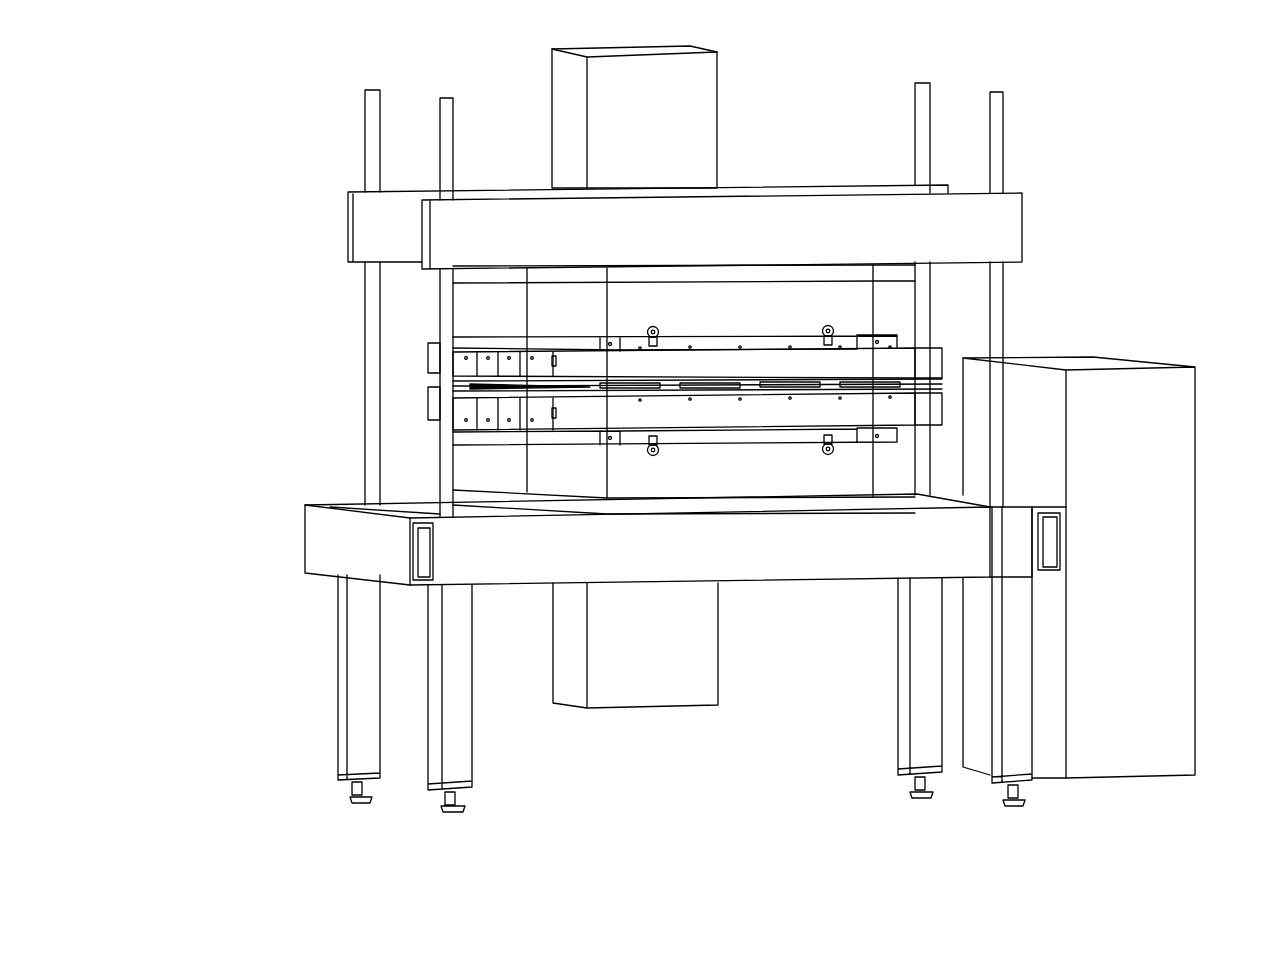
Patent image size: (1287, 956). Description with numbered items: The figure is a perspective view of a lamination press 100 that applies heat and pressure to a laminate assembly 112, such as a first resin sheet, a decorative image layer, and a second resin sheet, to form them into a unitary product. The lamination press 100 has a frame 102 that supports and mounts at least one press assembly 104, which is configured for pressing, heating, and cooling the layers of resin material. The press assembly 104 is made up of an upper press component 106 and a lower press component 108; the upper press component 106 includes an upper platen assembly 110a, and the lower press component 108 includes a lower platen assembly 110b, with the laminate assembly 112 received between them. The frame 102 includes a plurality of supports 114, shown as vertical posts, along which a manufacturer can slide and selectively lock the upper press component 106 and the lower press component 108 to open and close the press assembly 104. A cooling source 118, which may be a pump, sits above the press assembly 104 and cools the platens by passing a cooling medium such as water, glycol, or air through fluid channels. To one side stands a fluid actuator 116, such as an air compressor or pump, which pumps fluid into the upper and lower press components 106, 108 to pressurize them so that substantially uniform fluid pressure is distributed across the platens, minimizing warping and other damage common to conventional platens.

The lamination press 100 is at (224, 92).
The frame 102 is at (322, 597).
The press assembly 104 is at (1198, 225).
The upper press component 106 is at (914, 319).
The lower press component 108 is at (916, 463).
The upper platen assembly 110a is at (428, 358).
The lower platen assembly 110b is at (428, 403).
The laminate assembly 112 is at (453, 384).
The supports 114 is at (447, 163).
The fluid actuator 116 is at (1185, 377).
The cooling source 118 is at (704, 57).